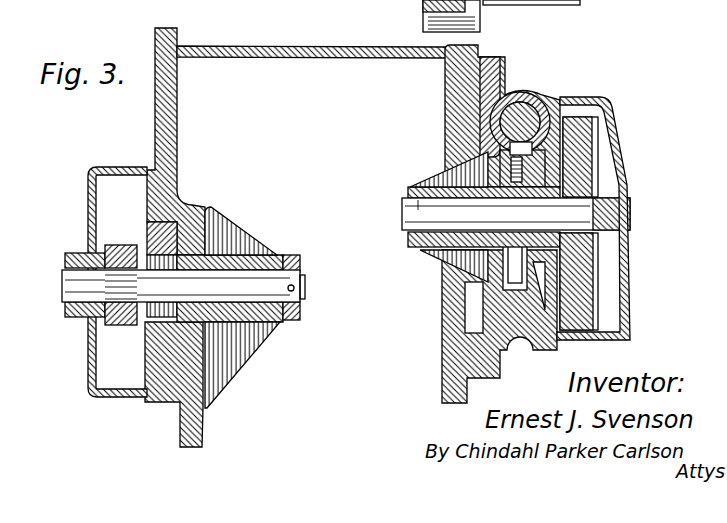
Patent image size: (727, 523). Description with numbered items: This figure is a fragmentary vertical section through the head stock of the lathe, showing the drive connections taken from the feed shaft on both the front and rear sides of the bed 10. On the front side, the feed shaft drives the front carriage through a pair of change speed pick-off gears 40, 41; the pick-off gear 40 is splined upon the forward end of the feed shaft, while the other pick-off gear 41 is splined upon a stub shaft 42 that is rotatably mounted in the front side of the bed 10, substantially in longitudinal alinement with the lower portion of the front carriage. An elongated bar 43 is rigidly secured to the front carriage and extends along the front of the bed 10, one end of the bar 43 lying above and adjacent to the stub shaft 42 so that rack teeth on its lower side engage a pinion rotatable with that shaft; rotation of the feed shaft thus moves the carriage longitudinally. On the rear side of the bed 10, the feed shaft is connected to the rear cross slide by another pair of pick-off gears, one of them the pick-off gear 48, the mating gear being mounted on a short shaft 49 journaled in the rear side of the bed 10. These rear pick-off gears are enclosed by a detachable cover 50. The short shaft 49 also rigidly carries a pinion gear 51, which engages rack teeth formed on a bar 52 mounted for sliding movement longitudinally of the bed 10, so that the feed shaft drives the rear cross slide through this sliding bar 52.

The bed 10 is at (177, 108).
The change speed pick-off gear 41 is at (118, 252).
The elongated bar 43 is at (185, 228).
The change speed pick-off gear 40 is at (199, 247).
The stub shaft 42 is at (233, 278).
The bar 52 is at (447, 101).
The pinion gear 51 is at (483, 150).
The short shaft 49 is at (418, 200).
The pick-off gear 48 is at (580, 142).
The detachable cover 50 is at (583, 4).